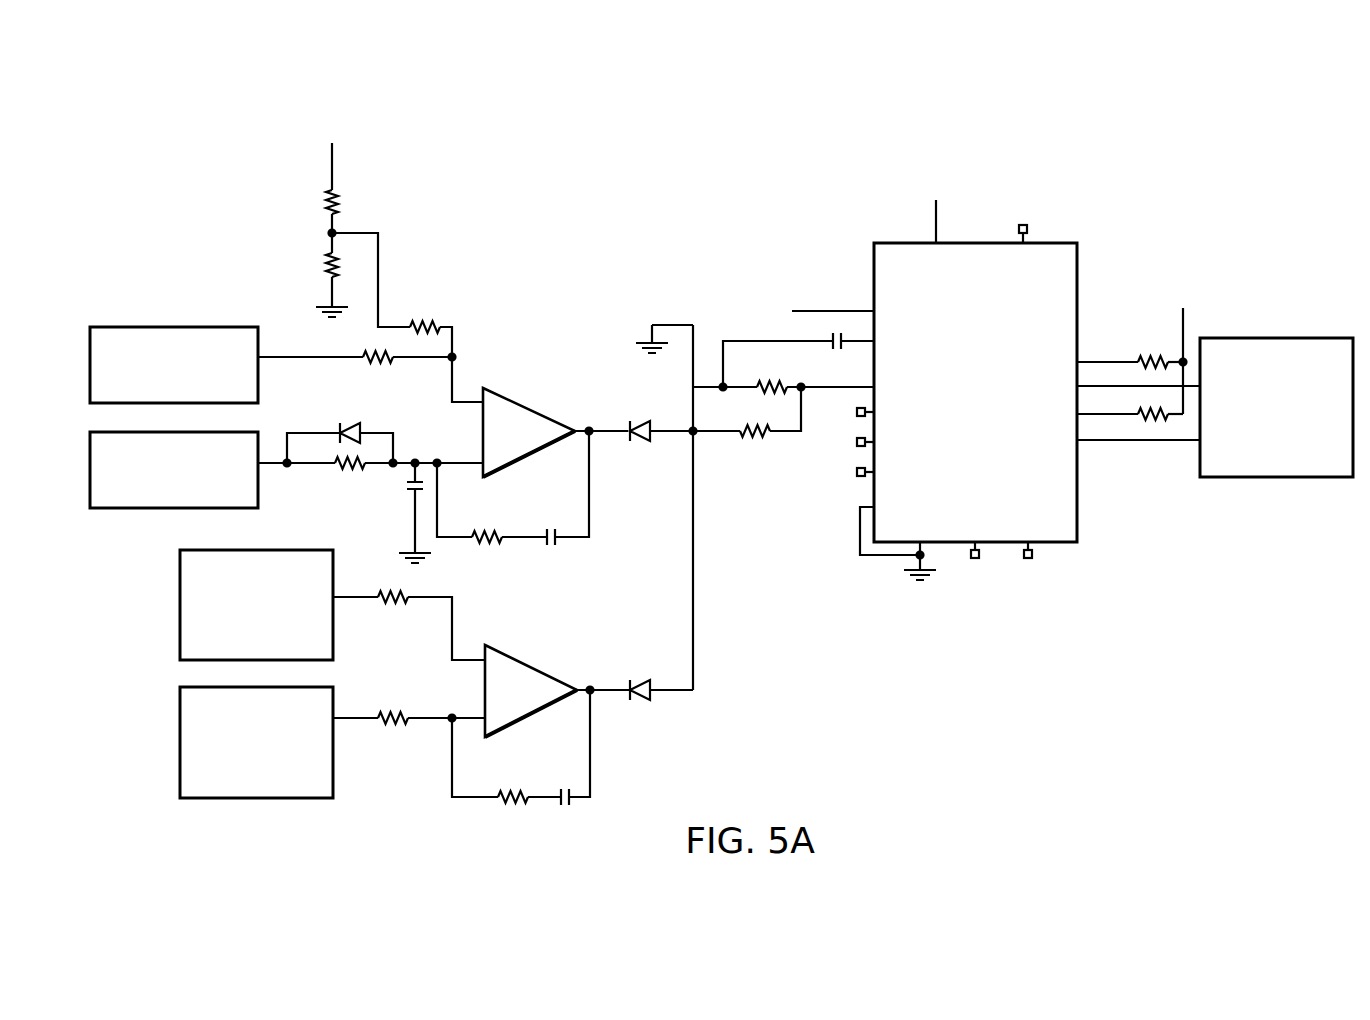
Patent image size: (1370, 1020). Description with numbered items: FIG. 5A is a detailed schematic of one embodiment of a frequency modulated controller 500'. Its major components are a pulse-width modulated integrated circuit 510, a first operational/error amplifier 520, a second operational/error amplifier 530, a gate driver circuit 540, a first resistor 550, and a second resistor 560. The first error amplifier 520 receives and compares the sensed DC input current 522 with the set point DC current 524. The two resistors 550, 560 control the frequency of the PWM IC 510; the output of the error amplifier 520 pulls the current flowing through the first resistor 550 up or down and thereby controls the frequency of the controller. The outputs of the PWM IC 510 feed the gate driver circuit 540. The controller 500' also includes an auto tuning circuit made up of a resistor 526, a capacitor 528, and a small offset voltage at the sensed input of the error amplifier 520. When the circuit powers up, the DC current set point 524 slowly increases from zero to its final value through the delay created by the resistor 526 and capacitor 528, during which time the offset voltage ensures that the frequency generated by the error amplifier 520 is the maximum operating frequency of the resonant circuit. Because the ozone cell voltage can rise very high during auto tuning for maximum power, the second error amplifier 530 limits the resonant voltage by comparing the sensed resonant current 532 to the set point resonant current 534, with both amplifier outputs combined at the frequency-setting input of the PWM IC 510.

The frequency modulated controller 500' is at (721, 447).
The pulse-width modulated integrated circuit 510 is at (1078, 252).
The first operational/error amplifier 520 is at (521, 403).
The sensed DC input current 522 is at (111, 327).
The set point DC current 524 is at (117, 508).
The resistor 526 is at (348, 462).
The capacitor 528 is at (408, 495).
The second operational/error amplifier 530 is at (523, 662).
The sensed resonant current 532 is at (180, 615).
The set point resonant current 534 is at (180, 746).
The gate driver circuit 540 is at (1308, 338).
The first resistor 550 is at (748, 425).
The second resistor 560 is at (776, 383).